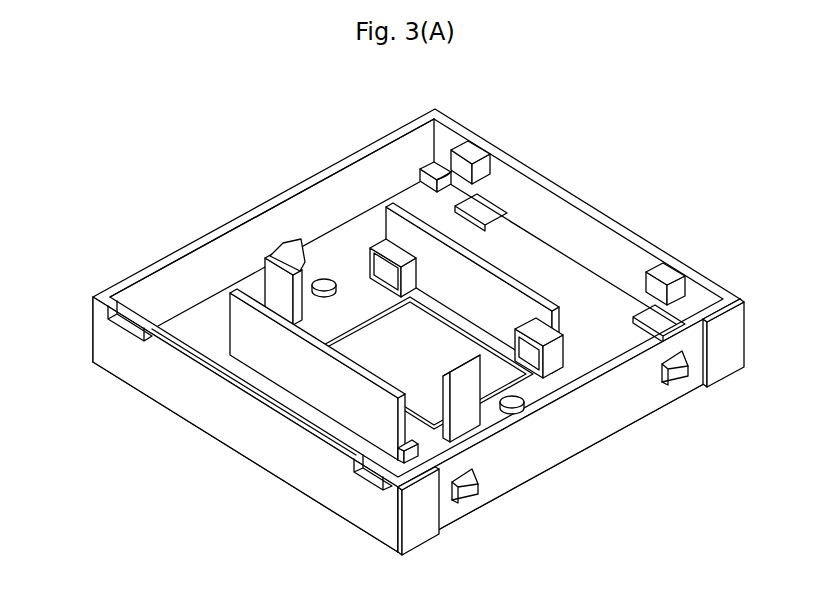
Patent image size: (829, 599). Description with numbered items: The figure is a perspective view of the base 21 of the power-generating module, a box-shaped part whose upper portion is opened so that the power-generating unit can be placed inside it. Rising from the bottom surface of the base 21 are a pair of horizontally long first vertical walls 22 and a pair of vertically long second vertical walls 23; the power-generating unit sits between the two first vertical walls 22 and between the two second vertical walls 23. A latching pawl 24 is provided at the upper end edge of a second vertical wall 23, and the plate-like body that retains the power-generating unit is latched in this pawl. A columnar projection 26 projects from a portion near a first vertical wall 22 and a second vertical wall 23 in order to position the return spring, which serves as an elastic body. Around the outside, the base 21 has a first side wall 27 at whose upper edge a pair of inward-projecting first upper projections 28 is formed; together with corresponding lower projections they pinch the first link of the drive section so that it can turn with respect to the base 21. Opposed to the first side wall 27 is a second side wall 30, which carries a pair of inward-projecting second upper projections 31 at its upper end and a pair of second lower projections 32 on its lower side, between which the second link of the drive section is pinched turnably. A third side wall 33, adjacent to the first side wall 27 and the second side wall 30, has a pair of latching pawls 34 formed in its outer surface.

The base 21 is at (146, 133).
The first vertical wall 22 is at (470, 255).
The second vertical wall 23 is at (289, 259).
The latching pawl 24 is at (299, 261).
The columnar projection 26 is at (325, 280).
The first side wall 27 is at (165, 378).
The first upper projection 28 is at (147, 311).
The second side wall 30 is at (620, 215).
The second upper projection 31 is at (467, 160).
The second lower projection 32 is at (433, 181).
The third side wall 33 is at (180, 250).
The latching pawl 34 is at (468, 494).